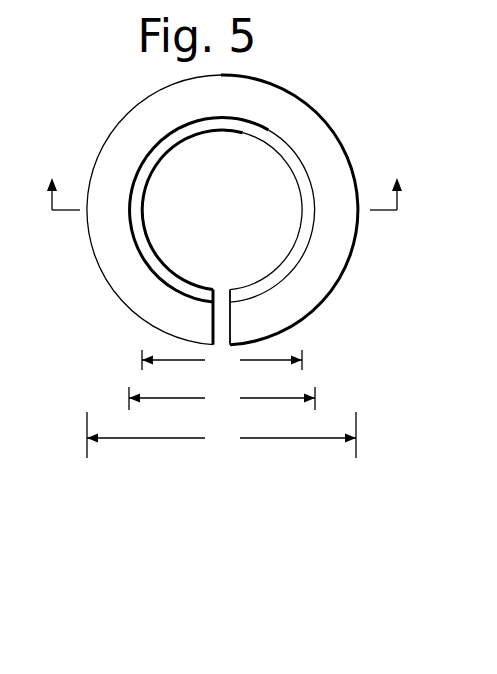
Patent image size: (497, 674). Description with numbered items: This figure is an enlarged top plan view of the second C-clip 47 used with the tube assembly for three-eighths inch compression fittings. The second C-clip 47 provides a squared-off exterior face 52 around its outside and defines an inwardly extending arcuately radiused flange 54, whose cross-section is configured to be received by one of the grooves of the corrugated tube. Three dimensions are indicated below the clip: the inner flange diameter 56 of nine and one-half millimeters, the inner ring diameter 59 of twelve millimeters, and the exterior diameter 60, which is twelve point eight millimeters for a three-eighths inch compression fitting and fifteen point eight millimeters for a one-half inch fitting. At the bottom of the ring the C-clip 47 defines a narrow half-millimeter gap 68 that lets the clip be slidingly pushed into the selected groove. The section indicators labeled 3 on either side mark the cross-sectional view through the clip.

The second C-clip 47 is at (278, 118).
The squared-off exterior face 52 is at (333, 268).
The inwardly extending arcuately radiused flange 54 is at (292, 174).
The inner flange diameter 56 is at (222, 361).
The inner ring diameter 59 is at (222, 399).
The exterior diameter 60 is at (221, 435).
The gap 68 is at (220, 287).
The section line 3- 3 is at (226, 194).